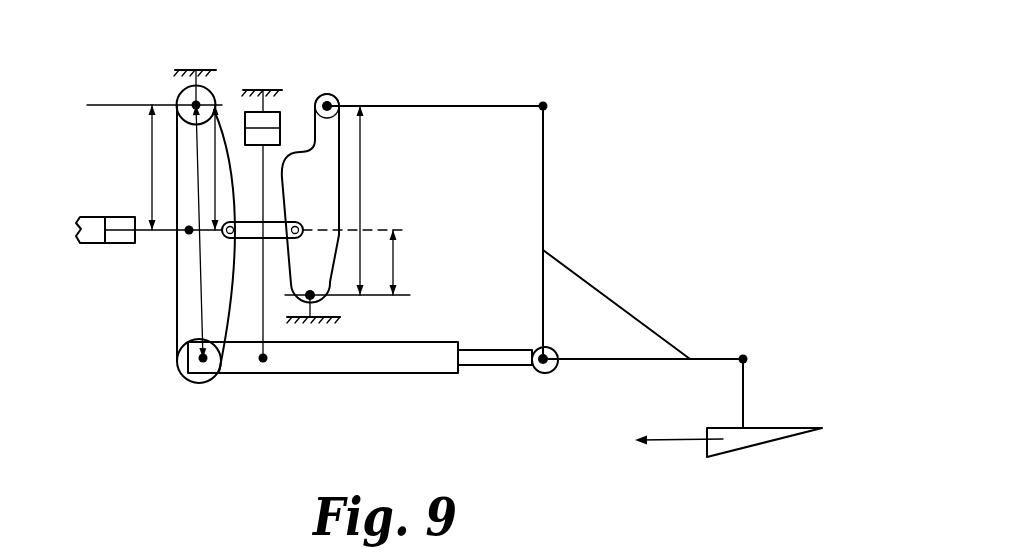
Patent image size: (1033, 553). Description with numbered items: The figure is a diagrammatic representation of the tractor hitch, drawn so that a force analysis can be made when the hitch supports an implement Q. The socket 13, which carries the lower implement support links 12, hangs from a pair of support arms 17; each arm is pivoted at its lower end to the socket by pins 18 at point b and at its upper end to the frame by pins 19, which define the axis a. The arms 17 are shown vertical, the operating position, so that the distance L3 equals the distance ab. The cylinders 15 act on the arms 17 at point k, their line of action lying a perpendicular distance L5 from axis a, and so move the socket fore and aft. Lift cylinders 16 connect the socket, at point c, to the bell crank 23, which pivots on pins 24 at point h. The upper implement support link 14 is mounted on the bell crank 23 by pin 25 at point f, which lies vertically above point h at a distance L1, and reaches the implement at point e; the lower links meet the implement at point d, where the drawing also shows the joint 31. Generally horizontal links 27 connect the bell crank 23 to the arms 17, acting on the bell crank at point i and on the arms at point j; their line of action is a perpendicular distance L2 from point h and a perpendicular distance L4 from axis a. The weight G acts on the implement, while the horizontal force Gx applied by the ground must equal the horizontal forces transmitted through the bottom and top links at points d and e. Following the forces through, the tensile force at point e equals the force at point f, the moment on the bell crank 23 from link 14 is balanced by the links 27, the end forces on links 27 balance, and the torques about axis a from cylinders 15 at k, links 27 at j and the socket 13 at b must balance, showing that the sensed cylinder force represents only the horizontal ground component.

The lower implement support links 12 is at (505, 357).
The socket 13 is at (417, 367).
The upper implement support link 14 is at (429, 105).
The hydraulic cylinders 15 is at (100, 220).
The hydraulic cylinders 16 is at (270, 118).
The support arms 17 is at (195, 300).
The pins 18 is at (195, 360).
The pins 19 is at (193, 103).
The bell crank 23 is at (327, 165).
The pins 24 is at (310, 291).
The pin 25 is at (332, 100).
The links 27 is at (246, 232).
The joint 31 is at (553, 372).
The axis a is at (193, 103).
The point b is at (205, 362).
The point c is at (265, 363).
The point d is at (538, 355).
The point e is at (543, 100).
The point f is at (324, 95).
The point h is at (313, 296).
The point i is at (298, 223).
The point j is at (230, 237).
The point k is at (186, 235).
The distance L1 is at (360, 148).
The distance L2 is at (394, 262).
The distance L3 is at (224, 113).
The distance L4 is at (197, 133).
The distance L5 is at (152, 143).
The implement Q is at (627, 298).
The weight G is at (682, 402).
The horizontal ground force Gx is at (679, 429).